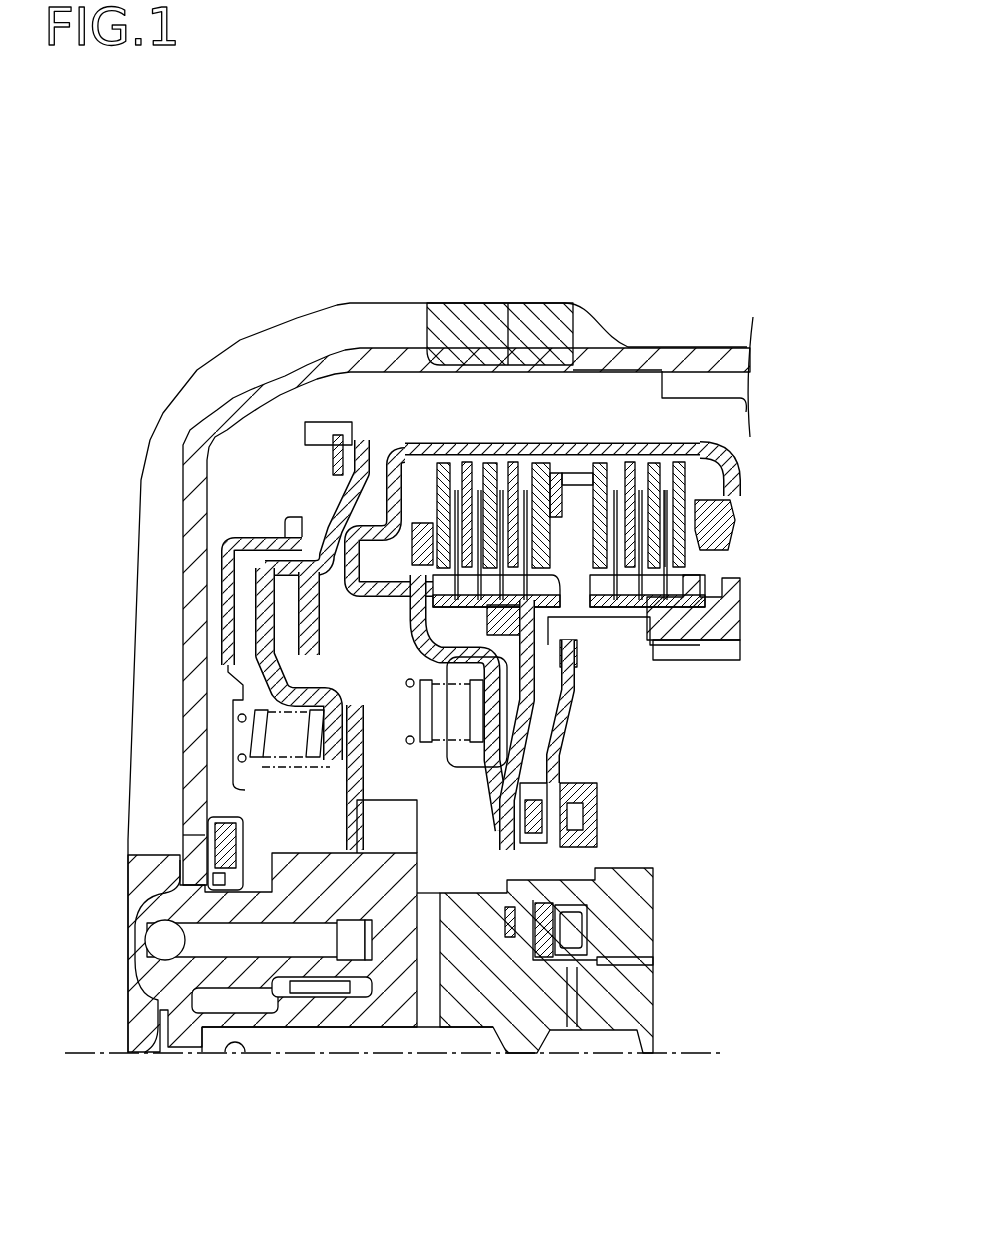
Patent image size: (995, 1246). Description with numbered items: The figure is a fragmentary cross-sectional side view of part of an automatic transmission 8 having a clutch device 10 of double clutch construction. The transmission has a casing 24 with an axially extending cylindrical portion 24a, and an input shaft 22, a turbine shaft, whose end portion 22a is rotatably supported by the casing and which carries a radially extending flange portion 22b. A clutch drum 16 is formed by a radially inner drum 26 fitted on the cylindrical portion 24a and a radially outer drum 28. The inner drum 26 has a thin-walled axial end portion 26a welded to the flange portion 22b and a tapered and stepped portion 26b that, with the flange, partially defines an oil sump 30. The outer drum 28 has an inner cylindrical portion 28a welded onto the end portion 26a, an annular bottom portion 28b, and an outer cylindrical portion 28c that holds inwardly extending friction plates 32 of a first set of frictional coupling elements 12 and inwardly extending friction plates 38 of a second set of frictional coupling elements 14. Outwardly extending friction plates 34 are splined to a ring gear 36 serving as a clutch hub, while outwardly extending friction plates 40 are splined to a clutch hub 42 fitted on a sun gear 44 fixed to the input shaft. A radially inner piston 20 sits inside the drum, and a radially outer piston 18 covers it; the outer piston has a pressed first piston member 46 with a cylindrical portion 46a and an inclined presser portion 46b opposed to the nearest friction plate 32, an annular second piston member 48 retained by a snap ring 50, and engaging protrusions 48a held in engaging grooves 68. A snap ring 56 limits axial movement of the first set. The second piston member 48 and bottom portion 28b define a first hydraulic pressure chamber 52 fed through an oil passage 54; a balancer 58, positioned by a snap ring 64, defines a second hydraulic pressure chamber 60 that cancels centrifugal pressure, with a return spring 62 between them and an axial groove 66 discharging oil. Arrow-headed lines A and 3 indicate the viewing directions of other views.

The automatic transmission 8 is at (718, 282).
The clutch device 10 is at (628, 392).
The first set of frictional coupling elements 12 is at (672, 437).
The second set of frictional coupling elements 14 is at (500, 360).
The clutch drum 16 is at (523, 760).
The radially outer piston 18 is at (326, 405).
The radially inner piston 20 is at (430, 650).
The input shaft 22 is at (665, 1008).
The end portion 22a is at (330, 1017).
The flange portion 22b is at (548, 870).
The casing 24 is at (322, 290).
The axially extending cylindrical portion 24a is at (230, 965).
The radially inner drum 26 is at (335, 800).
The thin-walled axial end portion 26a is at (415, 825).
The tapered and stepped portion 26b is at (600, 982).
The radially outer drum 28 is at (333, 470).
The inner cylindrical portion 28a is at (475, 815).
The annular bottom portion 28b is at (320, 733).
The outer cylindrical portion 28c is at (502, 438).
The oil sump 30 is at (397, 895).
The inwardly extending friction plates 32 is at (737, 640).
The outwardly extending friction plates 34 is at (678, 562).
The ring gear 36 is at (727, 607).
The inwardly extending friction plates 38 is at (465, 458).
The outwardly extending friction plates 40 is at (478, 468).
The clutch hub 42 is at (527, 735).
The sun gear 44 is at (637, 943).
The first piston member 46 is at (556, 439).
The cylindrical portion 46a is at (607, 443).
The presser portion 46b is at (740, 498).
The second piston member 48 is at (253, 669).
The engaging protrusions 48a is at (352, 392).
The snap ring 50 is at (333, 446).
The first hydraulic pressure chamber 52 is at (345, 780).
The oil passage 54 is at (145, 940).
The snap ring 56 is at (590, 603).
The balancer 58 is at (227, 572).
The second hydraulic pressure chamber 60 is at (247, 617).
The return spring 62 is at (247, 688).
The snap ring 64 is at (215, 825).
The axial groove 66 is at (205, 835).
The engaging grooves 68 is at (363, 427).
The arrow-headed line 3 is at (355, 393).
The arrow-headed line A is at (245, 490).